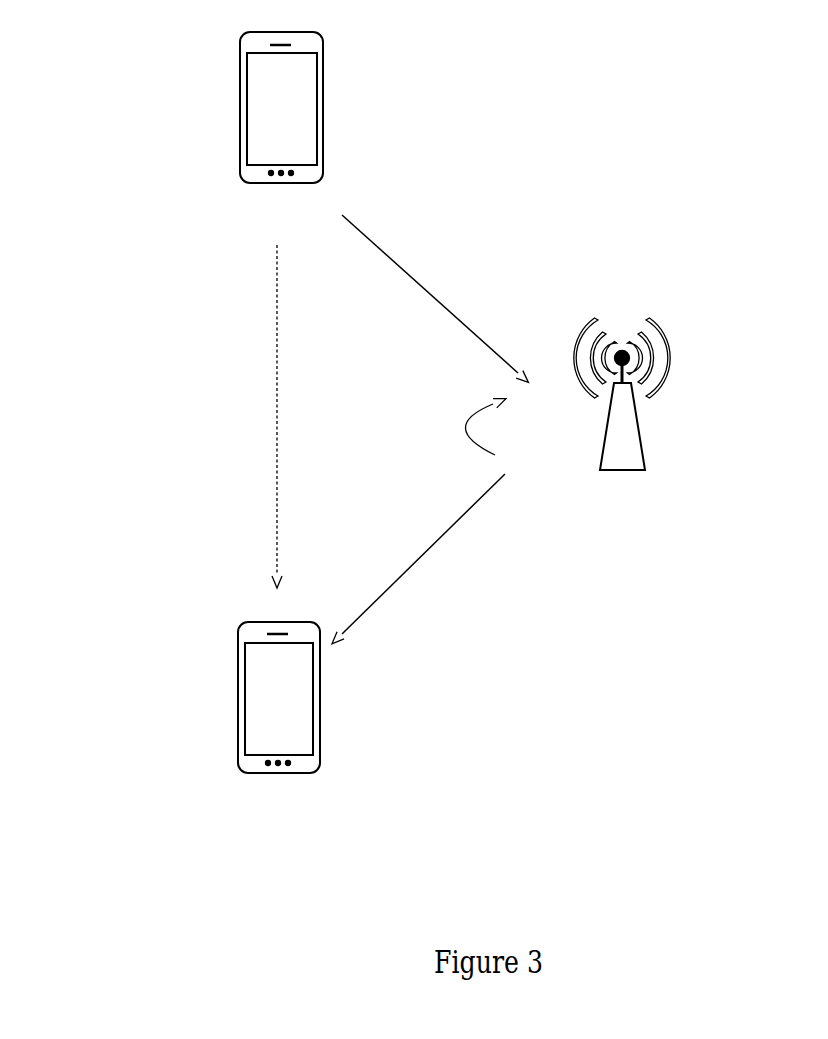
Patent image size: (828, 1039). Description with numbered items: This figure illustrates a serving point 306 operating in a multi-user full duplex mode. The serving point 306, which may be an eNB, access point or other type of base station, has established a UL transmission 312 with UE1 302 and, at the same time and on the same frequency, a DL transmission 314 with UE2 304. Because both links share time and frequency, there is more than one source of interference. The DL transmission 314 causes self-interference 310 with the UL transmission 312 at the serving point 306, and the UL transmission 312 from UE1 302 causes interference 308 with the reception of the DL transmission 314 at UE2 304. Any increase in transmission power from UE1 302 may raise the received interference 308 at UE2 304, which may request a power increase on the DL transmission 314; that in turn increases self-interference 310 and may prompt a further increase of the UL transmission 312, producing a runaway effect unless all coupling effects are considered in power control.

The UE1 302 is at (322, 63).
The UE2 304 is at (320, 728).
The serving point 306 is at (640, 442).
The interference 308 is at (278, 383).
The self-interference 310 is at (496, 452).
The UL transmission 312 is at (455, 312).
The DL transmission 314 is at (473, 508).